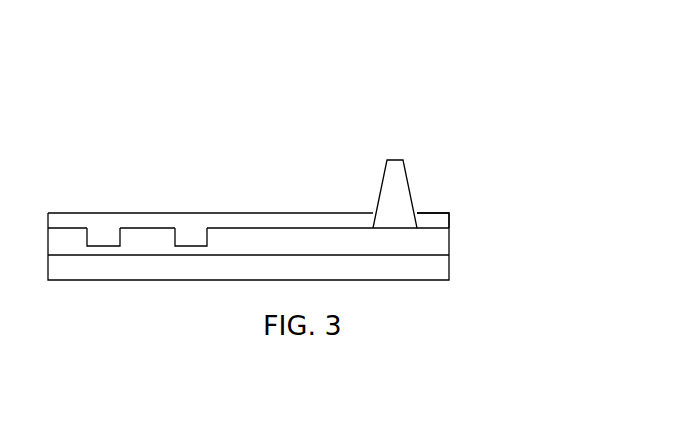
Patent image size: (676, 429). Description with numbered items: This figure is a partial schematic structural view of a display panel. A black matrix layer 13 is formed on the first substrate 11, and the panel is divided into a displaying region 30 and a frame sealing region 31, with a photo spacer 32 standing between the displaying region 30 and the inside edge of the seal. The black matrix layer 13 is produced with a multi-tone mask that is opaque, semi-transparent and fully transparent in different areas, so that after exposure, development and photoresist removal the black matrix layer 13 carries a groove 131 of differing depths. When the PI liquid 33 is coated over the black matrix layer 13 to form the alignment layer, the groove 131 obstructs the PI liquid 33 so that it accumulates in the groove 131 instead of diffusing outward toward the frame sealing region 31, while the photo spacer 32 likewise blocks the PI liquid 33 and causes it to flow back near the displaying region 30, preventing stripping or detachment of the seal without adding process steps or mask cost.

The first substrate 11 is at (133, 270).
The black matrix layer 13 is at (277, 245).
The groove 131 is at (103, 238).
The displaying region 30 is at (90, 203).
The frame sealing region 31 is at (442, 218).
The photo spacer 32 is at (397, 176).
The PI liquid 33 is at (258, 223).